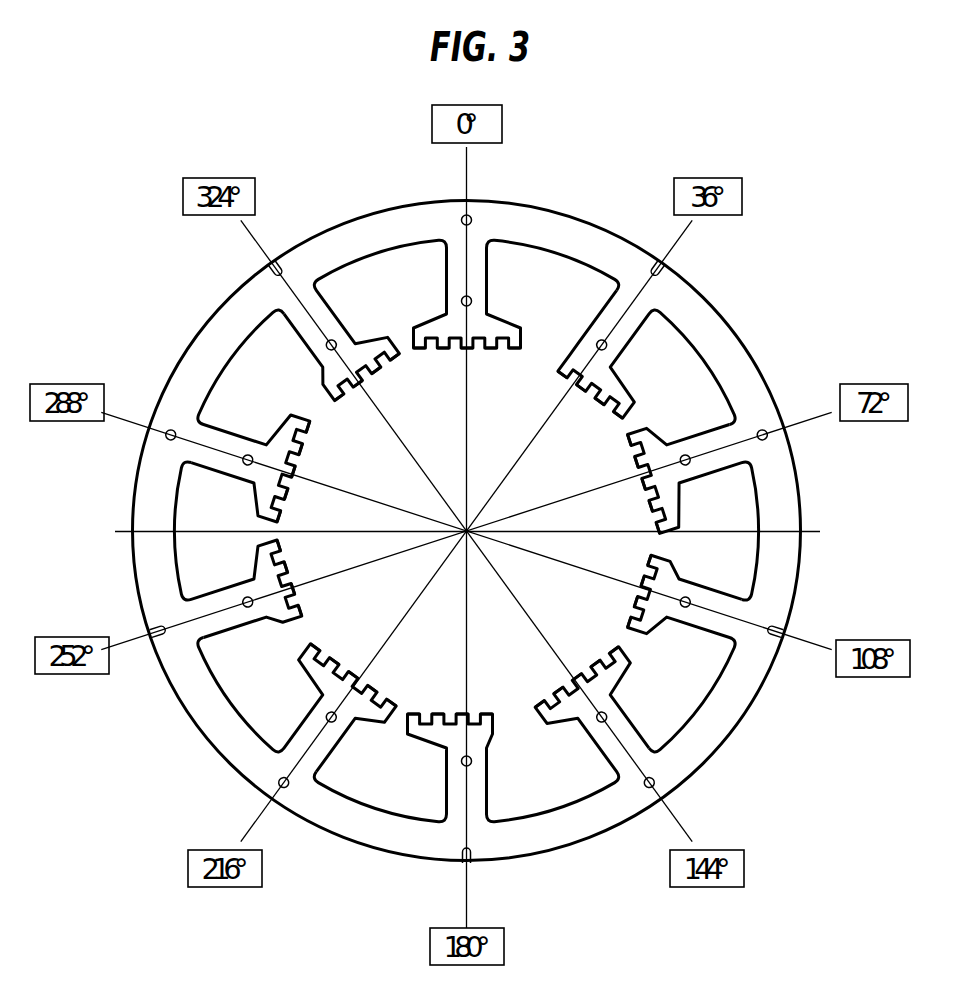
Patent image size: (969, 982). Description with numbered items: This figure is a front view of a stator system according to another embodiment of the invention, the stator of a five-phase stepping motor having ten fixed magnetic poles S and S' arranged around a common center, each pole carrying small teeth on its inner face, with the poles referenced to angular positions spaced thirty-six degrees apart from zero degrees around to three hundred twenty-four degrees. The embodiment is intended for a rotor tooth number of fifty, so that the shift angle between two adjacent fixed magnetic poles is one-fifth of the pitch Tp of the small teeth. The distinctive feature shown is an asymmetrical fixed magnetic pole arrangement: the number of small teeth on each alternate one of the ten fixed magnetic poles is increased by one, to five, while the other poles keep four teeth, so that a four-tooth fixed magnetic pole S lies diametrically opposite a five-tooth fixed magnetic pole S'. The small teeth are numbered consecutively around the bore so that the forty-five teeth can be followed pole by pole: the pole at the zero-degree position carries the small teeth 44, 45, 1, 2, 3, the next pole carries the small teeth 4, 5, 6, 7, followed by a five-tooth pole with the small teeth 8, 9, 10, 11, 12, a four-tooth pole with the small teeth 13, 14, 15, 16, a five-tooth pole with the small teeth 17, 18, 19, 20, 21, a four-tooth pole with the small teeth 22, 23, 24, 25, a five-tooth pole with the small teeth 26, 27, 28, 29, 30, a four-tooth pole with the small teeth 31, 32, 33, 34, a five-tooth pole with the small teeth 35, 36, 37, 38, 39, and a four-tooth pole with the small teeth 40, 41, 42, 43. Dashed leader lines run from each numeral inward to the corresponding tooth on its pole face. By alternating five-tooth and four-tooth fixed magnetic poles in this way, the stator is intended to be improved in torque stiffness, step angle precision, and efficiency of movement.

The stator tooth 1 is at (466, 381).
The stator tooth 2 is at (486, 382).
The small teeth 3 is at (505, 386).
The stator tooth 4 is at (547, 405).
The stator tooth 5 is at (561, 414).
The stator tooth 6 is at (576, 428).
The stator tooth 7 is at (587, 442).
The stator tooth 8 is at (598, 459).
The stator tooth 9 is at (605, 474).
The stator tooth 10 is at (611, 492).
The stator tooth 11 is at (615, 510).
The stator tooth 12 is at (616, 526).
The stator tooth 13 is at (614, 556).
The stator tooth 14 is at (611, 573).
The stator tooth 15 is at (605, 588).
The stator tooth 16 is at (598, 603).
The stator tooth 17 is at (582, 626).
The stator tooth 18 is at (570, 639).
The stator tooth 19 is at (556, 651).
The stator tooth 20 is at (543, 660).
The stator tooth 21 is at (527, 668).
The stator tooth 22 is at (480, 680).
The stator tooth 23 is at (458, 681).
The stator tooth 24 is at (442, 679).
The stator tooth 25 is at (424, 675).
The stator tooth 26 is at (405, 668).
The stator tooth 27 is at (390, 660).
The stator tooth 28 is at (375, 650).
The stator tooth 29 is at (360, 636).
The stator tooth 30 is at (348, 624).
The stator tooth 31 is at (330, 592).
The stator tooth 32 is at (323, 576).
The stator tooth 33 is at (319, 558).
The stator tooth 34 is at (317, 539).
The stator tooth 35 is at (317, 525).
The stator tooth 36 is at (319, 505).
The stator tooth 37 is at (323, 487).
The stator tooth 38 is at (330, 468).
The stator tooth 39 is at (338, 454).
The stator tooth 40 is at (365, 421).
The stator tooth 41 is at (379, 409).
The stator tooth 42 is at (393, 400).
The stator tooth 43 is at (409, 392).
The stator tooth 44 is at (429, 386).
The stator tooth 45 is at (447, 382).